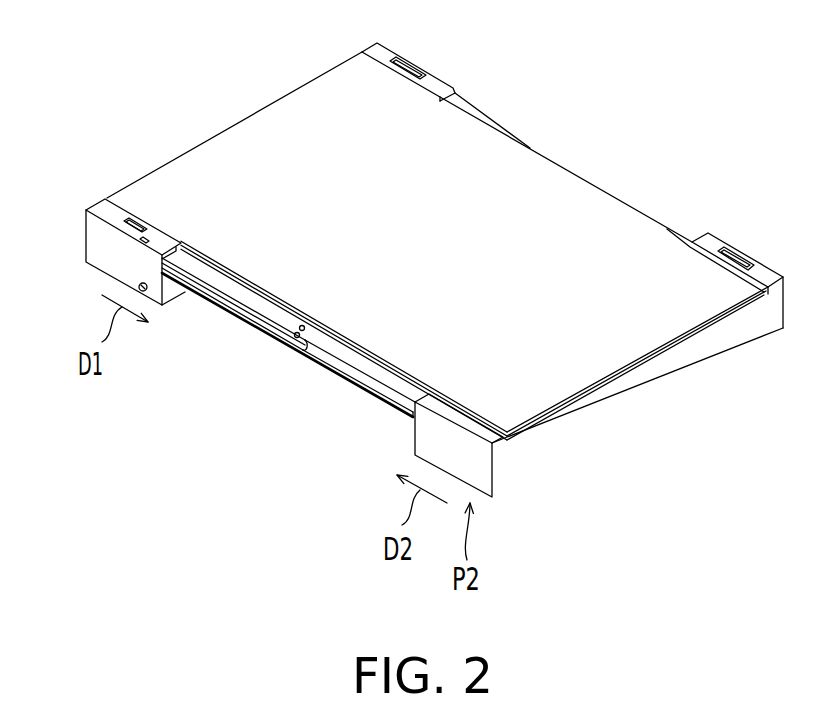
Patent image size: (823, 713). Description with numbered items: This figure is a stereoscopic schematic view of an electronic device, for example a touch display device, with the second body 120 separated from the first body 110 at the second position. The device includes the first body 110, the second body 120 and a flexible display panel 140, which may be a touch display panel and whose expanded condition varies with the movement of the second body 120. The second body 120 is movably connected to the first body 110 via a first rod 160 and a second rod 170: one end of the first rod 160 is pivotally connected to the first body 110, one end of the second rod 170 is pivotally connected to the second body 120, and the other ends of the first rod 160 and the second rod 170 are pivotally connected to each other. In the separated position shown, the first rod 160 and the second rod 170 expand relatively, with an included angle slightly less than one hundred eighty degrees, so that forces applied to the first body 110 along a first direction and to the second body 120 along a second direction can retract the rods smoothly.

The first body 110 is at (92, 233).
The second body 120 is at (482, 463).
The flexible display panel 140 is at (555, 172).
The first rod 160 is at (230, 297).
The second rod 170 is at (363, 365).